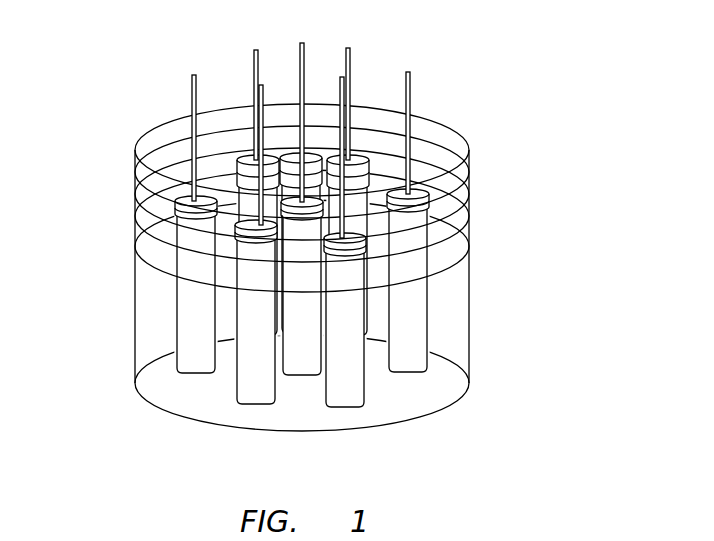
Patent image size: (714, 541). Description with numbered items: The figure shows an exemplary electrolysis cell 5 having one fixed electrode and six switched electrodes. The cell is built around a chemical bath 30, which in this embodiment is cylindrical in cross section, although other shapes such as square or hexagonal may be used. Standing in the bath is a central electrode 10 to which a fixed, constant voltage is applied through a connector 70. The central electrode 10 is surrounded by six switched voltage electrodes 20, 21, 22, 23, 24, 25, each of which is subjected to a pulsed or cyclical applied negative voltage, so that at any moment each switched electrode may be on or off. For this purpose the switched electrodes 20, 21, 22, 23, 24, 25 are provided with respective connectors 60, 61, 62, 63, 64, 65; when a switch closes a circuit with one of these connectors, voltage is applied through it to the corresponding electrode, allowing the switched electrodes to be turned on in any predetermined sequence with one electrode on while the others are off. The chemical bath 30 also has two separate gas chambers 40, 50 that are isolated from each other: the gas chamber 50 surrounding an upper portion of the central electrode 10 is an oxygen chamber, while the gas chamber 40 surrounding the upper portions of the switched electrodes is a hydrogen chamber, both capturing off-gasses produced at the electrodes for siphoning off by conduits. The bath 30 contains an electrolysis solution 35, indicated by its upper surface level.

The electrolysis cell 5 is at (312, 237).
The central electrode 10 is at (305, 388).
The switched voltage electrode 20 is at (372, 192).
The switched voltage electrode 21 is at (283, 165).
The switched voltage electrode 22 is at (178, 318).
The switched voltage electrode 23 is at (241, 404).
The switched voltage electrode 24 is at (350, 408).
The switched voltage electrode 25 is at (420, 375).
The chemical bath 30 is at (452, 312).
The electrolysis solution 35 is at (458, 257).
The gas chamber 40 is at (136, 204).
The gas chamber 50 is at (135, 178).
The connector 60 is at (352, 50).
The connector 61 is at (263, 88).
The connector 62 is at (191, 80).
The connector 63 is at (253, 62).
The connector 64 is at (338, 86).
The connector 65 is at (410, 75).
The connector 70 is at (309, 44).